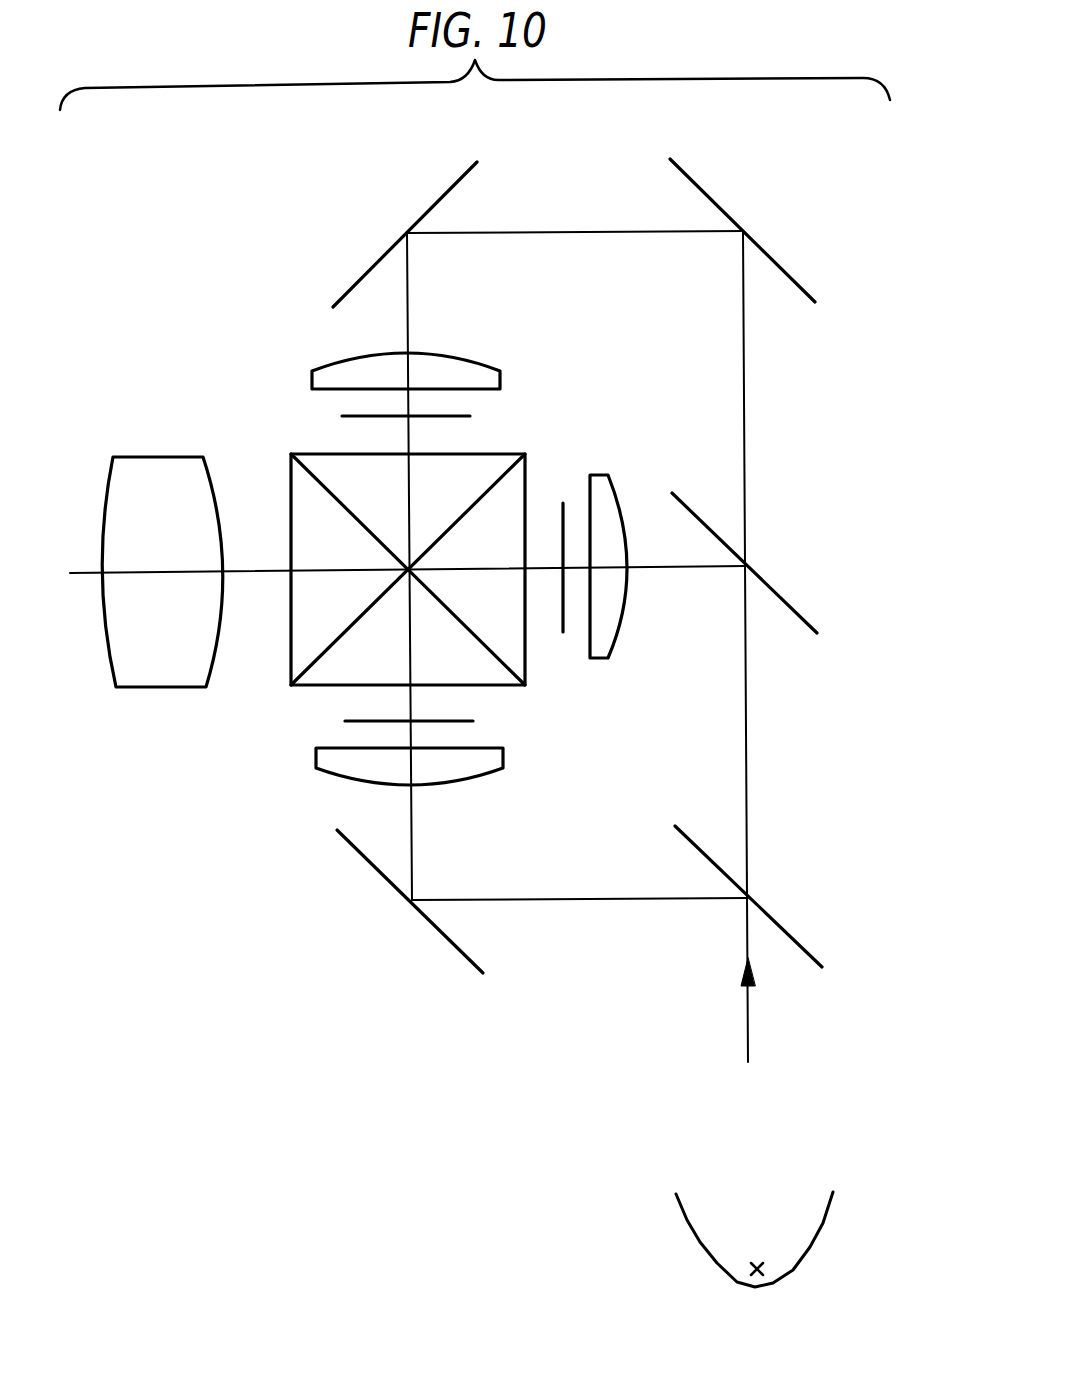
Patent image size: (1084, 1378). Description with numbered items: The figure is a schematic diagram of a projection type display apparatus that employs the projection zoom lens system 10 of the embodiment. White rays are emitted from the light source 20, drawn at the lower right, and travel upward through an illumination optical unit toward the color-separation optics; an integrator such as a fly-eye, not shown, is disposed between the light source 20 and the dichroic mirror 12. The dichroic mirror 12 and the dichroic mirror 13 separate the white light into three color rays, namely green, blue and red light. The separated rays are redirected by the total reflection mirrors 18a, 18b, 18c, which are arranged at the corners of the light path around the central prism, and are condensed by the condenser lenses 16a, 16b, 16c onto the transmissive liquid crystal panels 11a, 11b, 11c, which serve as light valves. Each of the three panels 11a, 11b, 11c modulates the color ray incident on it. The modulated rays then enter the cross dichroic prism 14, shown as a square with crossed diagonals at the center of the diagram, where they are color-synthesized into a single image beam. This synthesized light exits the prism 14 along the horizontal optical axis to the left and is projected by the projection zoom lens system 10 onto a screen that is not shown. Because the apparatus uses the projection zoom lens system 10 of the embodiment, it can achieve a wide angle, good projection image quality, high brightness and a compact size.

The projection zoom lens system 10 is at (157, 677).
The cross dichroic prism 14 is at (297, 650).
The condenser lens 16a is at (467, 767).
The condenser lens 16b is at (615, 647).
The condenser lens 16c is at (472, 367).
The transmissive liquid crystal panel 11a is at (458, 717).
The transmissive liquid crystal panel 11b is at (565, 518).
The transmissive liquid crystal panel 11c is at (342, 416).
The total reflection mirror 18a is at (443, 937).
The total reflection mirror 18b is at (785, 267).
The total reflection mirror 18c is at (342, 298).
The dichroic mirror 13 is at (797, 612).
The dichroic mirror 12 is at (797, 945).
The light source 20 is at (862, 1221).